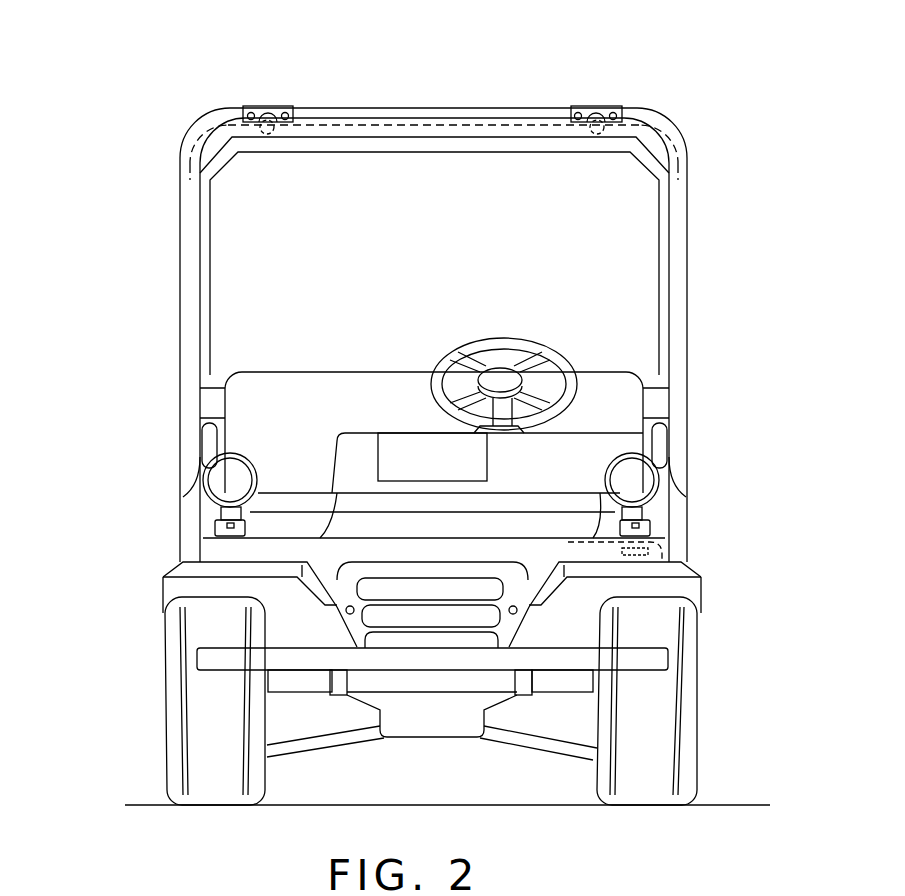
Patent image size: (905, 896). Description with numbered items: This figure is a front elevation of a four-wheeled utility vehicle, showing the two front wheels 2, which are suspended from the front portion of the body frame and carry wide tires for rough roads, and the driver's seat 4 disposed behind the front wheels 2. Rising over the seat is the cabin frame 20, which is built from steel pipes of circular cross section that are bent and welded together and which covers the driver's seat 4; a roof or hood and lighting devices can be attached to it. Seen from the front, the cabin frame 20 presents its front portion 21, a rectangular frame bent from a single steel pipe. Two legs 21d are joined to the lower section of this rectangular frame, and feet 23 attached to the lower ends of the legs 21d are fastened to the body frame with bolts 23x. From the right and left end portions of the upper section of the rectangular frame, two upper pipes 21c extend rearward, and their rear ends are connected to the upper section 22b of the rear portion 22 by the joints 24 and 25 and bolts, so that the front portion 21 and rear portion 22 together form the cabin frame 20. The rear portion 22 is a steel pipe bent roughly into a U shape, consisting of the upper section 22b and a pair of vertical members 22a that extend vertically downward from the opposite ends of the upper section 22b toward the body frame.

The front wheels 2 is at (173, 735).
The driver's seat 4 is at (350, 380).
The cabin frame 20 is at (173, 97).
The front portion 21 is at (688, 273).
The upper pipes 21c is at (270, 133).
The legs 21d is at (650, 518).
The rear portion 22 is at (477, 108).
The vertical members 22a is at (680, 135).
The upper section 22b is at (372, 108).
The feet 23 is at (650, 538).
The bolts 23x is at (677, 555).
The joint 24 is at (250, 107).
The joint 25 is at (432, 118).